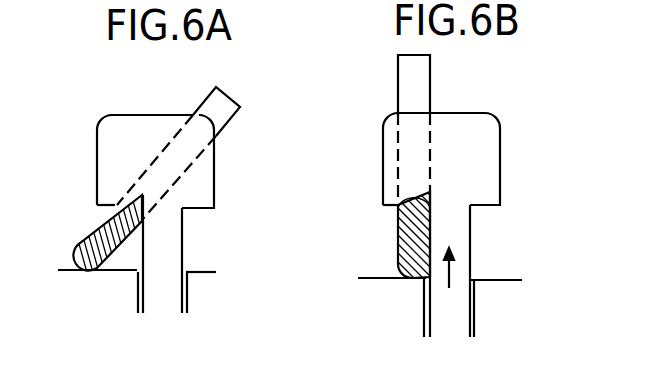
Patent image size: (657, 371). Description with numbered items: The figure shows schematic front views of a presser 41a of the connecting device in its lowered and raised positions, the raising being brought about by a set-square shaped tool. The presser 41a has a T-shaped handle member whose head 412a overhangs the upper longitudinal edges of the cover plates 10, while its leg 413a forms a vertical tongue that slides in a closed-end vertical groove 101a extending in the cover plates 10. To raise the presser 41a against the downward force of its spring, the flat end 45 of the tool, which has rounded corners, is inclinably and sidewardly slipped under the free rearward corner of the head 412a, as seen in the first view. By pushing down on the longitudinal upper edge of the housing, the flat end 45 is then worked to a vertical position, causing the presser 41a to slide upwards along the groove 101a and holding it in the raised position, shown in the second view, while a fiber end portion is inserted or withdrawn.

In FIG. 6A, the presser 41a is at (151, 189).
In FIG. 6B, the presser 41a is at (482, 196).
In FIG. 6A, the head 412a is at (145, 128).
In FIG. 6B, the head 412a is at (496, 138).
In FIG. 6A, the leg 413a is at (167, 246).
In FIG. 6B, the leg 413a is at (462, 229).
In FIG. 6A, the flat end 45 is at (97, 228).
In FIG. 6B, the flat end 45 is at (404, 216).
In FIG. 6A, the cover plates 10 is at (72, 277).
In FIG. 6B, the cover plates 10 is at (387, 296).
In FIG. 6A, the closed-end vertical groove 101a is at (138, 305).
In FIG. 6B, the closed-end vertical groove 101a is at (424, 330).